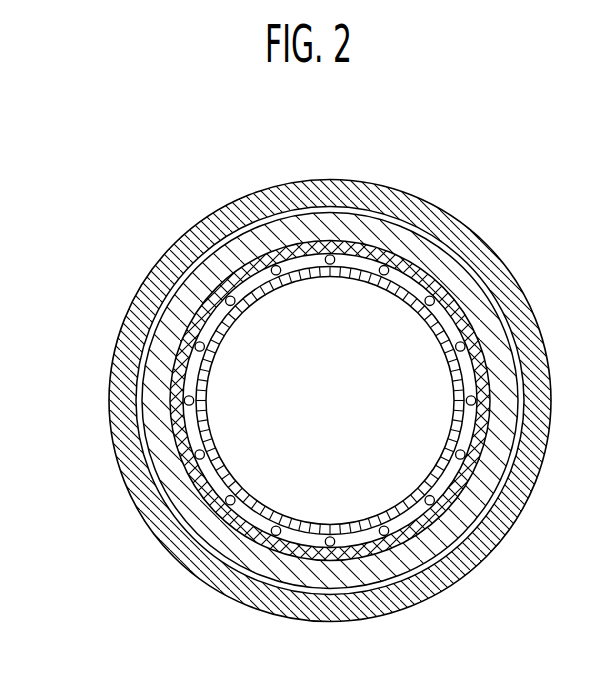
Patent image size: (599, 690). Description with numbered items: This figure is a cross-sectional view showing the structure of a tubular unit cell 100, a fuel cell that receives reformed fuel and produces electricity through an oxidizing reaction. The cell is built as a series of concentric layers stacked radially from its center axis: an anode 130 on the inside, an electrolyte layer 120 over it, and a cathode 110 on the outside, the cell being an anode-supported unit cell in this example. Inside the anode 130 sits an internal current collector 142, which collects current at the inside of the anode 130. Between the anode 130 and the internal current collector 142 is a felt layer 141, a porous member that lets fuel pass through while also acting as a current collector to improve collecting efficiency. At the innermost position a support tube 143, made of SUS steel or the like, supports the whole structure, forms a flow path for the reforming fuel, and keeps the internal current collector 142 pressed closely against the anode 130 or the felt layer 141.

The unit cell 100 is at (116, 188).
The cathode 110 is at (332, 187).
The electrolyte layer 120 is at (263, 206).
The anode 130 is at (202, 234).
The felt layer 141 is at (175, 372).
The internal current collector 142 is at (187, 401).
The support tube 143 is at (205, 422).